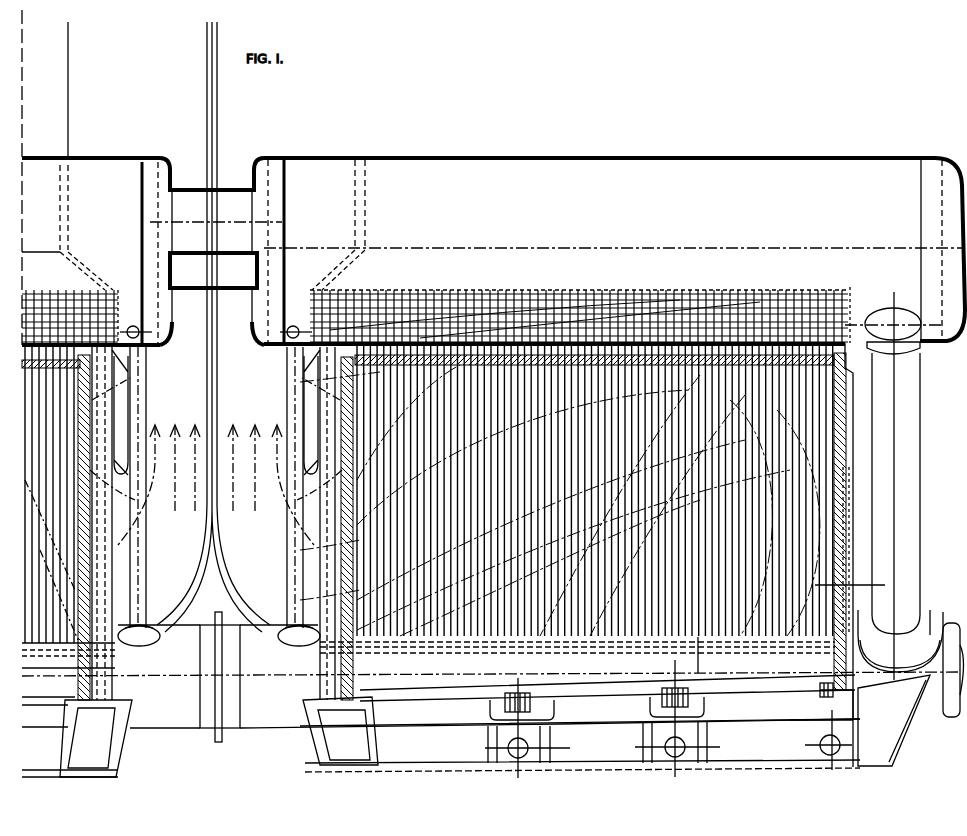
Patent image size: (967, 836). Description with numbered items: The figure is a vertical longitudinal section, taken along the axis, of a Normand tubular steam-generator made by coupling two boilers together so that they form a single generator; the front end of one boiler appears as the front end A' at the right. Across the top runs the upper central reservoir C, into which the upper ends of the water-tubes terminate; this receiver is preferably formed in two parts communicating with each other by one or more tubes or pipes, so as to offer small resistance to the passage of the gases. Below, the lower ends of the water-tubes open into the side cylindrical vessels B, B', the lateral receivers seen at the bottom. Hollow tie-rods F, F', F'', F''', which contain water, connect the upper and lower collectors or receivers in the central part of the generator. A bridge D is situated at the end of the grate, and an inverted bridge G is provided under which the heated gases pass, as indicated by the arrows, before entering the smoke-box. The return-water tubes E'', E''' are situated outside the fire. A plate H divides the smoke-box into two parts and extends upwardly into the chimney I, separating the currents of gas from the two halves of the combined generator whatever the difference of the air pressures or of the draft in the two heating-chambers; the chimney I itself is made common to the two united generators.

The chimney I is at (216, 238).
The upper central reservoir C is at (614, 251).
The front end of boiler A' is at (942, 250).
The plate H is at (217, 378).
The inverted bridge G is at (216, 412).
The bridge D is at (368, 541).
The hollow tie-rod F is at (138, 487).
The hollow tie-rod F' is at (139, 496).
The hollow tie-rod F'' is at (295, 487).
The hollow tie-rod F''' is at (299, 496).
The side cylindrical vessel B is at (491, 676).
The side cylindrical vessel B' is at (223, 677).
The return-water tube E'' is at (868, 486).
The return-water tube E''' is at (908, 623).